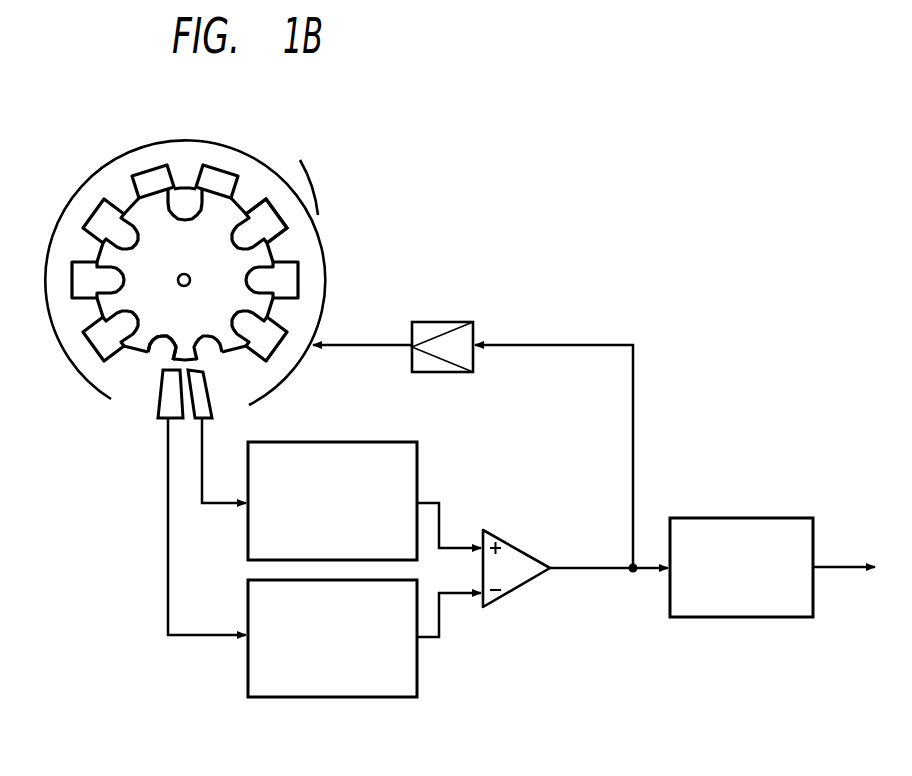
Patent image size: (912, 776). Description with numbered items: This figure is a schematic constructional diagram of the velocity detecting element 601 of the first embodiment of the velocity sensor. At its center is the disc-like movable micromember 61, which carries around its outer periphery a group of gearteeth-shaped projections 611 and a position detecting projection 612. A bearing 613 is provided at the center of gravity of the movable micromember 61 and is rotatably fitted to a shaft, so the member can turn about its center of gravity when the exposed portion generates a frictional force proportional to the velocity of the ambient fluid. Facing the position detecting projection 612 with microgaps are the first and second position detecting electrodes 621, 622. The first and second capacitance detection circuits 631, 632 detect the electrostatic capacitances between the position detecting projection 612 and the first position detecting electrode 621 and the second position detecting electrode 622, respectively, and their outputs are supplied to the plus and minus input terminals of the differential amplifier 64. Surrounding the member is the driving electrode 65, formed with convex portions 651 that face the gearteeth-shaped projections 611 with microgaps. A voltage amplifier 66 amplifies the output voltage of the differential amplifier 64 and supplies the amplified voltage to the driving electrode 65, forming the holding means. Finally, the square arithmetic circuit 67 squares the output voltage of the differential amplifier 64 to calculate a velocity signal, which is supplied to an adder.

The capacitive displacement sensor unit 601 is at (331, 272).
The movable micromember 61 is at (181, 220).
The gearteeth-shaped projections 611 is at (297, 251).
The position detecting projection 612 is at (137, 322).
The bearing 613 is at (179, 275).
The first position detecting electrode 621 is at (197, 413).
The second position detecting electrode 622 is at (157, 410).
The first capacitance detection circuit 631 is at (368, 442).
The second capacitance detection circuit 632 is at (360, 697).
The differential amplifier 64 is at (520, 585).
The driving electrode 65 is at (286, 207).
The convex portions 651 is at (250, 196).
The voltage amplifier 66 is at (463, 322).
The square arithmetic circuit 67 is at (757, 518).